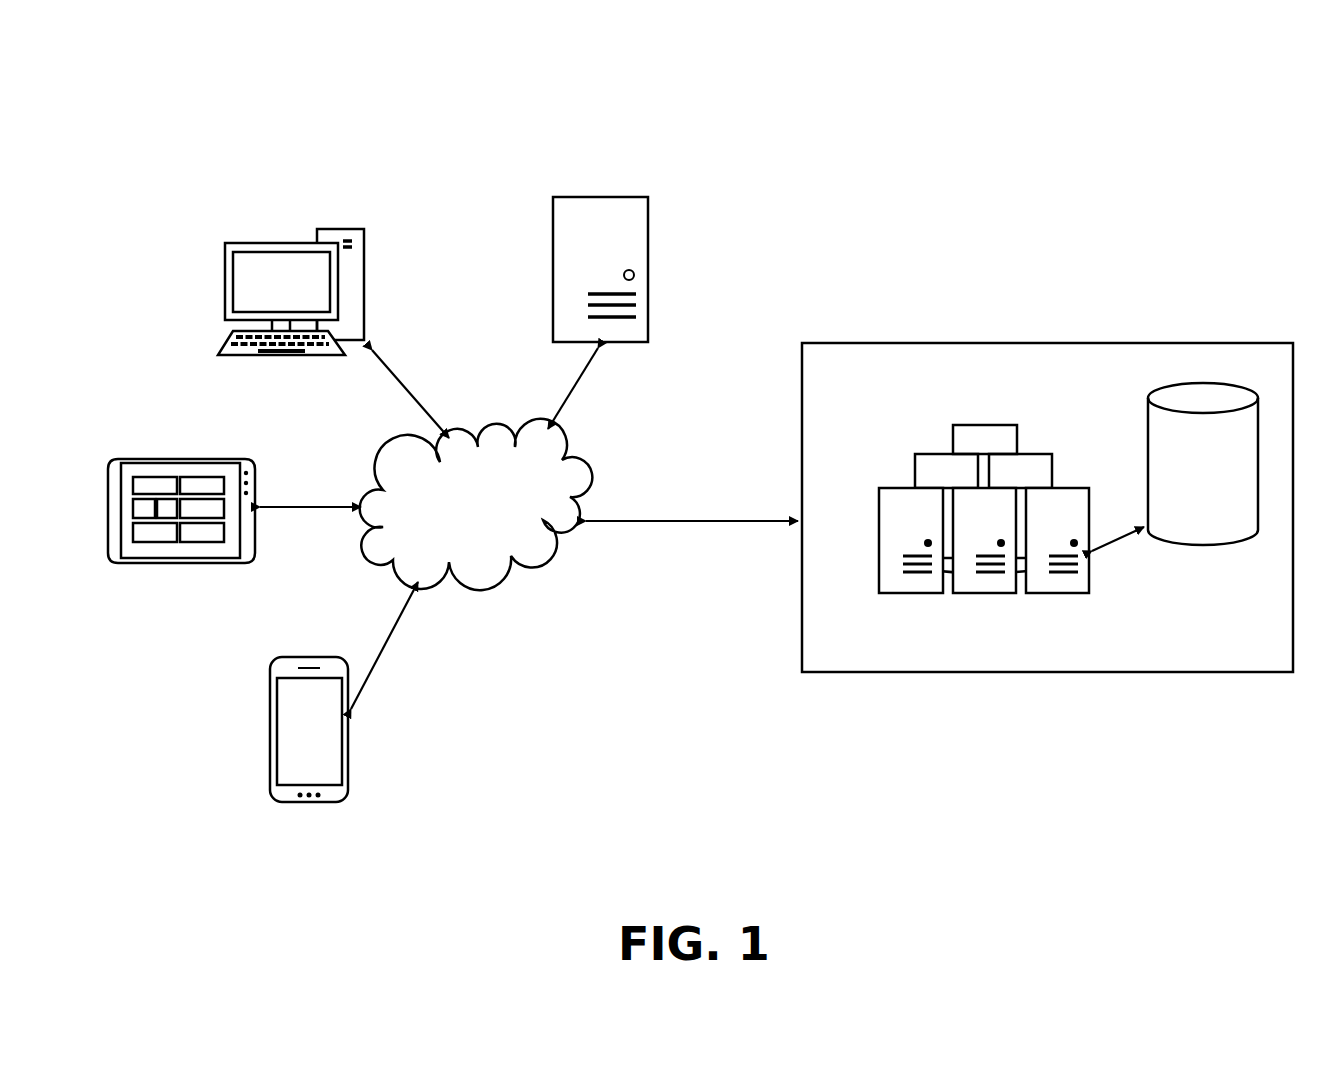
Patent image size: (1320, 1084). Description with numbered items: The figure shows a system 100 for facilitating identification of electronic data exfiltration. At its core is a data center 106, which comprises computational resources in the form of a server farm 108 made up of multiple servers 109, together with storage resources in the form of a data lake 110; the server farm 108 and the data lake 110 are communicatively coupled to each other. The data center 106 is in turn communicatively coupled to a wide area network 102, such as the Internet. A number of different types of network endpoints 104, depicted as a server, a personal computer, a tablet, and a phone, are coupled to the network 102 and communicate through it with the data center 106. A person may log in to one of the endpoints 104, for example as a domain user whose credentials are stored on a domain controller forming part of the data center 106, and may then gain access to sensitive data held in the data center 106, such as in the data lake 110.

The system 100 is at (1193, 206).
The wide area network 102 is at (496, 527).
The network endpoints 104 is at (364, 242).
The data center 106 is at (1122, 672).
The server farm 108 is at (990, 491).
The servers 109 is at (1084, 503).
The data lake 110 is at (1226, 483).